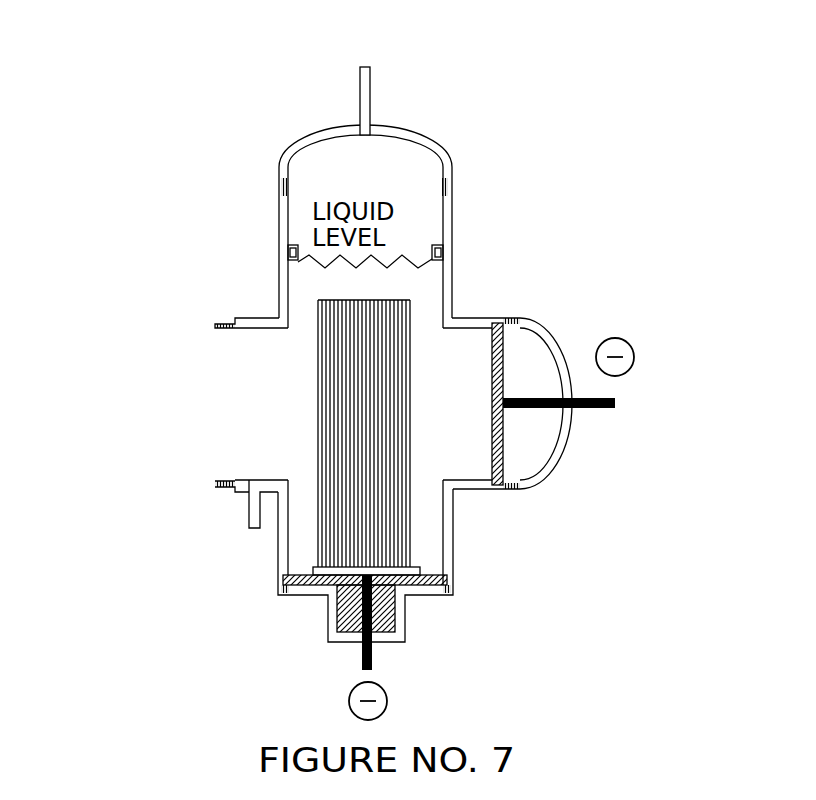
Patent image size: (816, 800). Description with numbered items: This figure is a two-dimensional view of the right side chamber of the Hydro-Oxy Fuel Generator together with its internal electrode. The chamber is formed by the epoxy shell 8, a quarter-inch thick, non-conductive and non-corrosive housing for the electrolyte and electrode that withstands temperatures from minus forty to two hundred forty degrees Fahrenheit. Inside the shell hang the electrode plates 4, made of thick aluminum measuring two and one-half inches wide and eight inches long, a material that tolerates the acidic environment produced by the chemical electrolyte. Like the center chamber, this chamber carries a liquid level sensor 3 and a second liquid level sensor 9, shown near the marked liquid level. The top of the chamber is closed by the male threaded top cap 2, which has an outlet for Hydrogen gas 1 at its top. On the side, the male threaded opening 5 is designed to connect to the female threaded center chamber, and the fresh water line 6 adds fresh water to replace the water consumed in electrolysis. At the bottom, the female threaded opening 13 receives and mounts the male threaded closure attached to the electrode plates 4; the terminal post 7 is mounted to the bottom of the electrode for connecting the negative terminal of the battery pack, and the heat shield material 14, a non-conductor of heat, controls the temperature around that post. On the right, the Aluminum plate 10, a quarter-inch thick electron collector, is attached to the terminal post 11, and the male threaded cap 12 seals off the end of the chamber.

The outlet for Hydrogen gas 1 is at (357, 63).
The male threaded top cap 2 is at (278, 176).
The liquid level sensor 3 is at (283, 251).
The electrode plates 4 is at (316, 411).
The male threaded opening 5 is at (213, 482).
The fresh water line 6 is at (248, 527).
The terminal post 7 is at (358, 662).
The epoxy shell 8 is at (457, 205).
The liquid level sensor 9 is at (445, 248).
The Aluminum plate 10 is at (502, 371).
The terminal post 11 is at (617, 398).
The male threaded cap 12 is at (522, 488).
The female threaded opening 13 is at (455, 595).
The heat shield material 14 is at (397, 621).